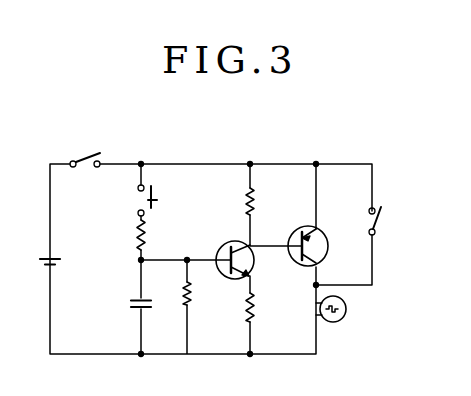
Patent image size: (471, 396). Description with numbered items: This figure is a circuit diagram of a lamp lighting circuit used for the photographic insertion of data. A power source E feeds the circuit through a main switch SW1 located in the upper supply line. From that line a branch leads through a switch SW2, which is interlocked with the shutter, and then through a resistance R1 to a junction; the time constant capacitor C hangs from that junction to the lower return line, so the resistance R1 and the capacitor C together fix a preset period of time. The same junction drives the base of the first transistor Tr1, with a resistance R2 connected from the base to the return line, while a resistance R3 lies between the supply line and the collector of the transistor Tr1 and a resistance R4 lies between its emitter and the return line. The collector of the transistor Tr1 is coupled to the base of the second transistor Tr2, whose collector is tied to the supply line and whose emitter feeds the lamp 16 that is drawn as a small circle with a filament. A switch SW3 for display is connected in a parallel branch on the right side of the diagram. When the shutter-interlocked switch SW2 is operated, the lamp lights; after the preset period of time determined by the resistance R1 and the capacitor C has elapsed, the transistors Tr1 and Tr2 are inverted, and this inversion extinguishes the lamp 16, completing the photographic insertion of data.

The main switch SW1 is at (76, 148).
The switch interlocked with a shutter SW2 is at (163, 193).
The switch for display SW3 is at (392, 226).
The resistance R1 is at (153, 235).
The resistance R2 is at (198, 297).
The resistance R3 is at (262, 202).
The resistance R4 is at (262, 308).
The time constant capacitor C is at (134, 306).
The power source E is at (41, 258).
The transistor Tr1 is at (251, 261).
The transistor Tr2 is at (317, 233).
The lamp 16 is at (340, 310).